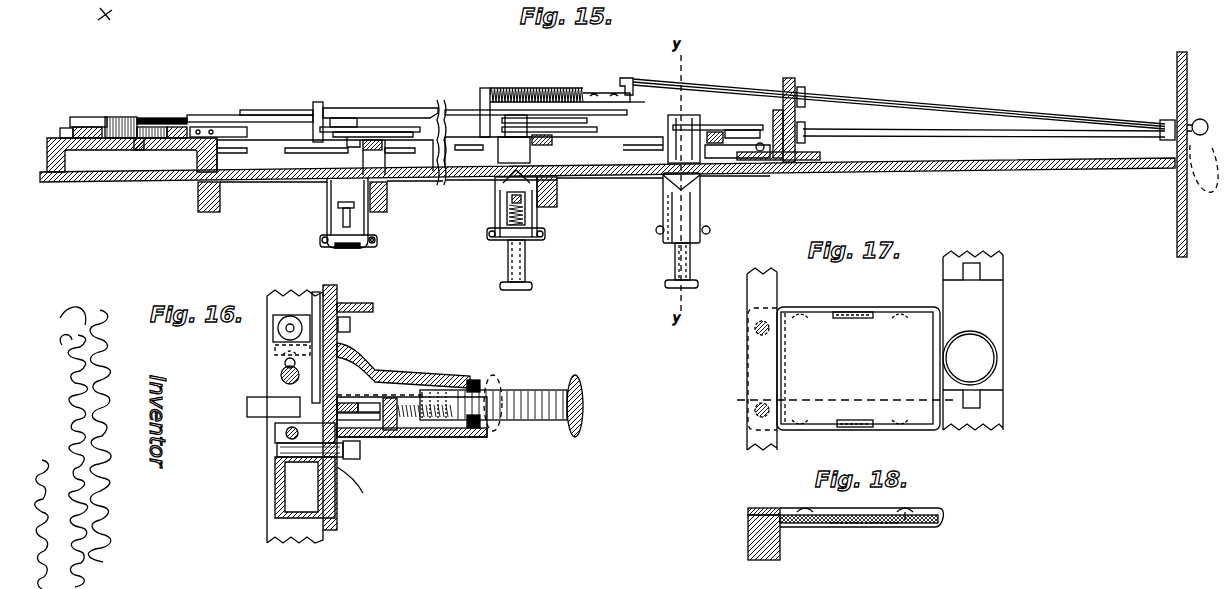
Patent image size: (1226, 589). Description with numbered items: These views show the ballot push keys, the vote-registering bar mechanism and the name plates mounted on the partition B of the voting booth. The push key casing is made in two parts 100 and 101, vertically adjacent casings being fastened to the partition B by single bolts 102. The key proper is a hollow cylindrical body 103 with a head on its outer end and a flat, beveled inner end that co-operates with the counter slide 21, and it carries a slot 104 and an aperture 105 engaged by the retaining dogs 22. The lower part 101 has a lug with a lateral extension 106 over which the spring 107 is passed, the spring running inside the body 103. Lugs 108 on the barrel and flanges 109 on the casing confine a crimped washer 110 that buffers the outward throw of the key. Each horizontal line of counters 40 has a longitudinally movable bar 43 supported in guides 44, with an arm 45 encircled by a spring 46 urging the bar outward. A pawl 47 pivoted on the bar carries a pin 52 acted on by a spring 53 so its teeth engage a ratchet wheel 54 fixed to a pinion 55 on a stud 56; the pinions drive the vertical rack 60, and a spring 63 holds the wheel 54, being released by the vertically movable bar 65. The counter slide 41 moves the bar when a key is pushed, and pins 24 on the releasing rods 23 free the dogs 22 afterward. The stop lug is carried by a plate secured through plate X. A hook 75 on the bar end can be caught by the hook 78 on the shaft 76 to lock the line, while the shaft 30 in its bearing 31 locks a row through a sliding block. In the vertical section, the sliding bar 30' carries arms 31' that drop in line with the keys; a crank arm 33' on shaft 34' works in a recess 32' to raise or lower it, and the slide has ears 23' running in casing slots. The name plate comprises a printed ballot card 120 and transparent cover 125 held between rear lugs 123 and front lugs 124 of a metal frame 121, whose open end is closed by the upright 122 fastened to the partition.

In FIG. 15, the plate X is at (48, 146).
In FIG. 15, the partition B is at (192, 178).
In FIG. 15, the counter slide 21 is at (680, 118).
In FIG. 15, the retaining dog 22 is at (597, 130).
In FIG. 15, the releasing rod 23 is at (556, 133).
In FIG. 15, the pin 24 is at (728, 130).
In FIG. 15, the shaft 30 is at (778, 133).
In FIG. 15, the bearing 31 is at (800, 112).
In FIG. 15, the arm 31' is at (737, 149).
In FIG. 16, the arm 31' is at (297, 376).
In FIG. 15, the shaft 34' is at (984, 125).
In FIG. 16, the shaft 34' is at (291, 317).
In FIG. 15, the counter 40 is at (440, 142).
In FIG. 15, the slide 41 is at (512, 140).
In FIG. 15, the longitudinally movable bar 43 is at (405, 109).
In FIG. 15, the guide 44 is at (323, 106).
In FIG. 15, the arm 45 is at (592, 94).
In FIG. 15, the spring 46 is at (545, 90).
In FIG. 15, the pawl 47 is at (182, 118).
In FIG. 15, the pin 52 is at (208, 115).
In FIG. 15, the spring 53 is at (238, 110).
In FIG. 15, the ratchet wheel 54 is at (125, 125).
In FIG. 15, the pinion 55 is at (122, 140).
In FIG. 15, the stud 56 is at (139, 150).
In FIG. 15, the rack 60 is at (174, 127).
In FIG. 15, the spring 63 is at (84, 117).
In FIG. 15, the vertically movable bar 65 is at (66, 128).
In FIG. 15, the hook 75 is at (640, 98).
In FIG. 15, the shaft 76 is at (912, 104).
In FIG. 15, the hook 78 is at (633, 79).
In FIG. 16, the upper casing part 100 is at (422, 371).
In FIG. 15, the lower casing part 101 is at (372, 220).
In FIG. 16, the lower casing part 101 is at (400, 433).
In FIG. 15, the bolt 102 is at (373, 238).
In FIG. 15, the hollow cylindrical body 103 is at (526, 262).
In FIG. 16, the hollow cylindrical body 103 is at (516, 391).
In FIG. 17, the hollow cylindrical body 103 is at (973, 340).
In FIG. 15, the slot 104 is at (507, 212).
In FIG. 15, the aperture 105 is at (495, 190).
In FIG. 16, the aperture 105 is at (352, 404).
In FIG. 15, the lateral extension 106 is at (340, 216).
In FIG. 16, the lateral extension 106 is at (390, 432).
In FIG. 16, the spring 107 is at (531, 421).
In FIG. 15, the lug 108 is at (540, 232).
In FIG. 16, the lug 108 is at (467, 386).
In FIG. 16, the flange 109 is at (478, 380).
In FIG. 15, the crimped washer 110 is at (508, 250).
In FIG. 16, the sliding bar 30' is at (282, 414).
In FIG. 16, the recess 32' is at (267, 336).
In FIG. 16, the crank arm 33' is at (245, 340).
In FIG. 16, the ear 23' is at (294, 470).
In FIG. 17, the ballot card 120 is at (851, 357).
In FIG. 18, the ballot card 120 is at (862, 518).
In FIG. 17, the frame 121 is at (878, 311).
In FIG. 18, the frame 121 is at (944, 518).
In FIG. 17, the upright 122 is at (750, 377).
In FIG. 18, the upright 122 is at (749, 534).
In FIG. 17, the rear lug 123 is at (804, 426).
In FIG. 18, the rear lug 123 is at (803, 510).
In FIG. 17, the front lug 124 is at (863, 427).
In FIG. 18, the front lug 124 is at (853, 527).
In FIG. 18, the transparent cover 125 is at (898, 527).